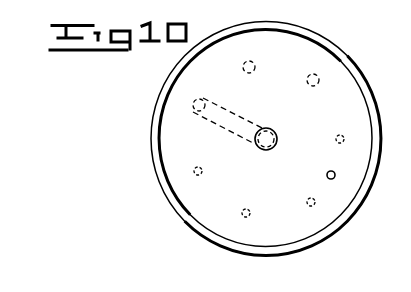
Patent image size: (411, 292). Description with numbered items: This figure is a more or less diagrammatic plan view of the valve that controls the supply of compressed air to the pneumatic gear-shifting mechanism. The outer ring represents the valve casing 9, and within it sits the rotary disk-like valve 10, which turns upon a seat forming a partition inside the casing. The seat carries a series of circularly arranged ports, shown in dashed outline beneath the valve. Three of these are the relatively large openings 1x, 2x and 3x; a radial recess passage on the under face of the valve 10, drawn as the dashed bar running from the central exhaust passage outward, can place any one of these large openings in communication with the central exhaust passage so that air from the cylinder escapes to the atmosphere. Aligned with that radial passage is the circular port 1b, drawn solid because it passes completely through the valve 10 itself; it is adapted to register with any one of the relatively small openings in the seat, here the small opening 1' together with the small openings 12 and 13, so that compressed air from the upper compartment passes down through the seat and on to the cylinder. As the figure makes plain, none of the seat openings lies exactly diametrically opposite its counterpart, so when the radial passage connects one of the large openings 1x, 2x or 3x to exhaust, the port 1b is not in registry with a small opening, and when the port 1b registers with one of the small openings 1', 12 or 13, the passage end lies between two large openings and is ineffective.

The valve casing 9 is at (354, 72).
The rotary disk-like valve 10 is at (277, 152).
The relatively large opening 1x is at (192, 108).
The relatively large opening 2x is at (252, 63).
The relatively large opening 3x is at (317, 77).
The relatively small opening 1' is at (359, 158).
The circular port 1b is at (335, 175).
The relatively small opening 12 is at (244, 219).
The relatively small opening 13 is at (195, 175).